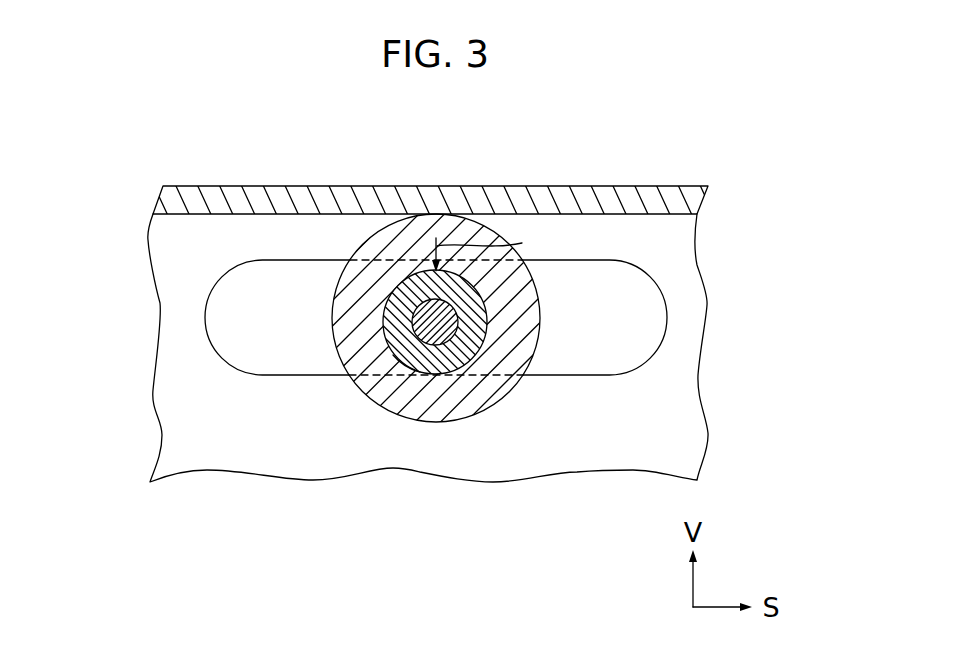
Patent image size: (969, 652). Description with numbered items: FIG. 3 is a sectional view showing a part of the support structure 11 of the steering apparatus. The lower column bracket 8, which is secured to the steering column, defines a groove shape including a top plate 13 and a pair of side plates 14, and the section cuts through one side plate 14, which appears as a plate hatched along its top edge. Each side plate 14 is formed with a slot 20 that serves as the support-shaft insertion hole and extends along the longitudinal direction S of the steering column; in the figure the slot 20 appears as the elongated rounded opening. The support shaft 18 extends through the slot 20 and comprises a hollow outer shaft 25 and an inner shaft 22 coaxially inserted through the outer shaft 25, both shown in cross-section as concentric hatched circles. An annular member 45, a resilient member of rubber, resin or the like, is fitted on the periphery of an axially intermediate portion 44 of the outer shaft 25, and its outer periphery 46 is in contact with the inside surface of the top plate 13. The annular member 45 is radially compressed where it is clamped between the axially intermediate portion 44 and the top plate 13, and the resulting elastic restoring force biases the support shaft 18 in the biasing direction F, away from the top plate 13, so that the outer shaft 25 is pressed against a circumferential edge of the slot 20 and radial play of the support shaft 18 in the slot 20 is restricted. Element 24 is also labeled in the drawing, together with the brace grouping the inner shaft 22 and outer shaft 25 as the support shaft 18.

The lower column bracket 8 is at (464, 348).
The support structure 11 is at (447, 156).
The top plate 13 is at (567, 193).
The side plates 14 is at (695, 332).
The support shaft 18 is at (416, 358).
The slot 20 is at (574, 366).
The inner shaft 22 is at (431, 342).
The bearing 24 is at (418, 298).
The outer shaft 25 is at (455, 352).
The axially intermediate portion 44 is at (396, 350).
The annular member 45 is at (345, 310).
The outer periphery 46 is at (435, 215).